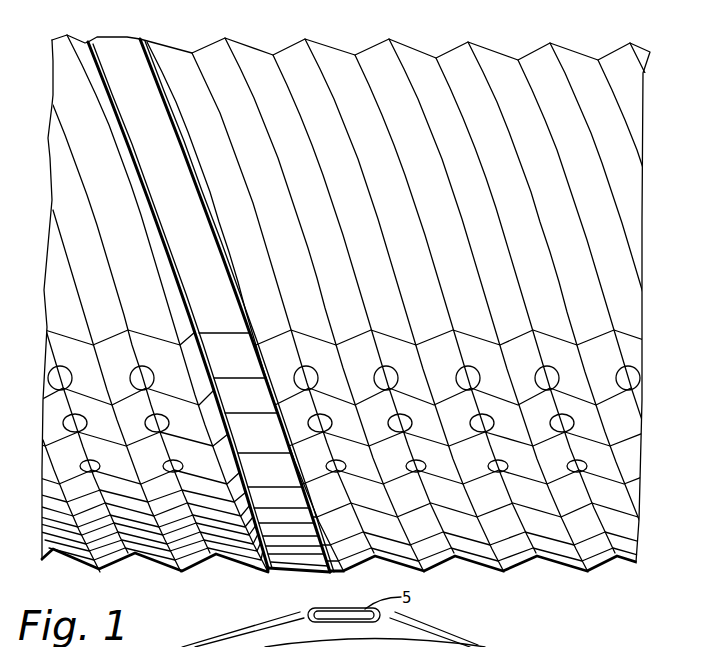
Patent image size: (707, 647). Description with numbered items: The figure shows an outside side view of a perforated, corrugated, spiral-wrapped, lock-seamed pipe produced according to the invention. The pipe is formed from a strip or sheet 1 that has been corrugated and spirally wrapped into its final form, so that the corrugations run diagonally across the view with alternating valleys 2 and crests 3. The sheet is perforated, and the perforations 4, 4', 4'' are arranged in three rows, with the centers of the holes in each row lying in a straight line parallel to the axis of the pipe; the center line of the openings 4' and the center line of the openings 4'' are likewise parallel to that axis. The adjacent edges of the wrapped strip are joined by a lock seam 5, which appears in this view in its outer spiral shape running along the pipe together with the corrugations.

The strip or sheet 1 is at (642, 115).
The valleys 2 is at (518, 58).
The crests 3 is at (470, 43).
The perforations 4 is at (344, 366).
The openings 4' is at (318, 416).
The openings 4'' is at (333, 461).
The lock seam 5 is at (125, 45).